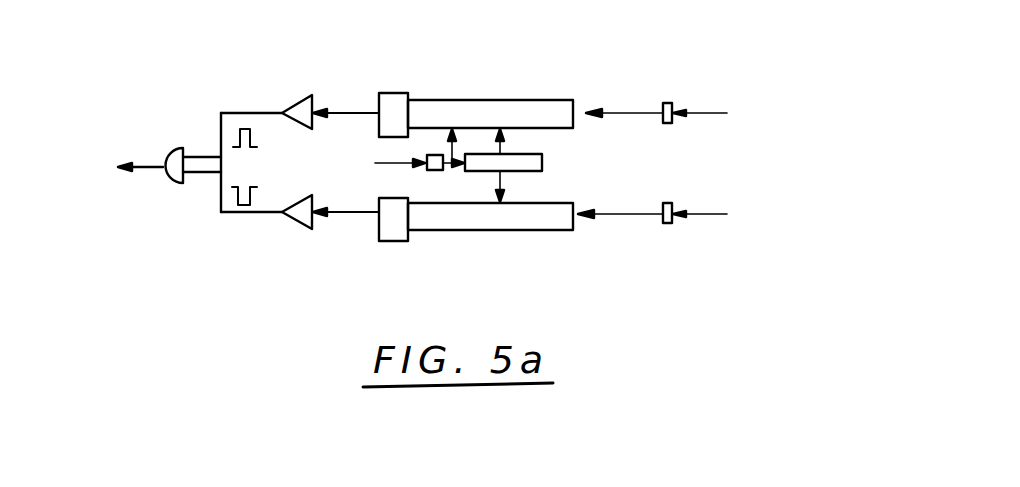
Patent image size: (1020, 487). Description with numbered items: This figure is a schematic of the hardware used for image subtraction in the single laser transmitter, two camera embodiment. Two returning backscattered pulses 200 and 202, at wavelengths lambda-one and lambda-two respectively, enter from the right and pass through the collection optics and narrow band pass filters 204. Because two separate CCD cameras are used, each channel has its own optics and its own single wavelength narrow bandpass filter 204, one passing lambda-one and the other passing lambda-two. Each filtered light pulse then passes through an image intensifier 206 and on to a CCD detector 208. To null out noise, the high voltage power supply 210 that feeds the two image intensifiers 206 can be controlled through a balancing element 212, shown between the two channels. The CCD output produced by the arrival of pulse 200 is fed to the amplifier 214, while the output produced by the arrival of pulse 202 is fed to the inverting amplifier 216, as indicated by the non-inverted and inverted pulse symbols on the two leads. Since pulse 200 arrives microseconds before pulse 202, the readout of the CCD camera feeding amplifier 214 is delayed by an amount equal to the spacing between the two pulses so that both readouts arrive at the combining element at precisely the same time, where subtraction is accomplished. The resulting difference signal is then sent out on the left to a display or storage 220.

The returning backscattered pulse 200 is at (676, 113).
The returning backscattered pulse 202 is at (673, 217).
The narrow band pass filter 204 is at (673, 103).
The image intensifier 206 is at (467, 100).
The CCD detector 208 is at (396, 93).
The high voltage power supply 210 is at (517, 154).
The balancing element 212 is at (440, 170).
The amplifier 214 is at (292, 102).
The inverting amplifier 216 is at (293, 222).
The display or storage 220 is at (111, 169).